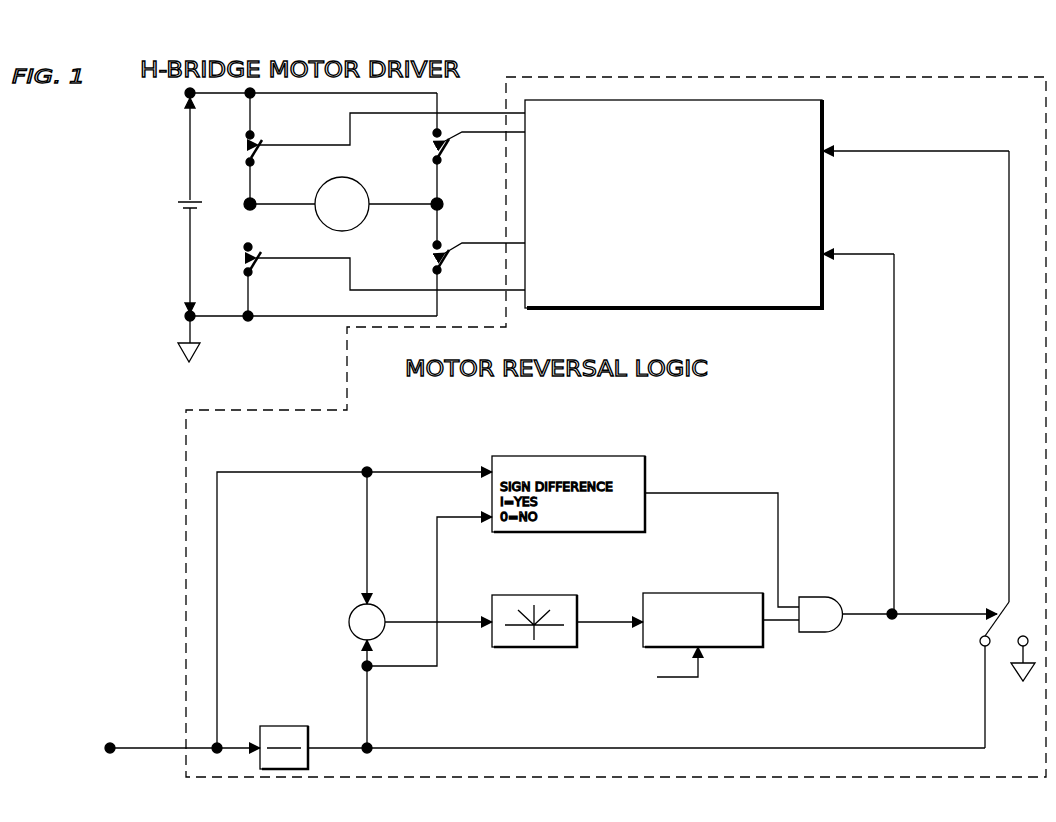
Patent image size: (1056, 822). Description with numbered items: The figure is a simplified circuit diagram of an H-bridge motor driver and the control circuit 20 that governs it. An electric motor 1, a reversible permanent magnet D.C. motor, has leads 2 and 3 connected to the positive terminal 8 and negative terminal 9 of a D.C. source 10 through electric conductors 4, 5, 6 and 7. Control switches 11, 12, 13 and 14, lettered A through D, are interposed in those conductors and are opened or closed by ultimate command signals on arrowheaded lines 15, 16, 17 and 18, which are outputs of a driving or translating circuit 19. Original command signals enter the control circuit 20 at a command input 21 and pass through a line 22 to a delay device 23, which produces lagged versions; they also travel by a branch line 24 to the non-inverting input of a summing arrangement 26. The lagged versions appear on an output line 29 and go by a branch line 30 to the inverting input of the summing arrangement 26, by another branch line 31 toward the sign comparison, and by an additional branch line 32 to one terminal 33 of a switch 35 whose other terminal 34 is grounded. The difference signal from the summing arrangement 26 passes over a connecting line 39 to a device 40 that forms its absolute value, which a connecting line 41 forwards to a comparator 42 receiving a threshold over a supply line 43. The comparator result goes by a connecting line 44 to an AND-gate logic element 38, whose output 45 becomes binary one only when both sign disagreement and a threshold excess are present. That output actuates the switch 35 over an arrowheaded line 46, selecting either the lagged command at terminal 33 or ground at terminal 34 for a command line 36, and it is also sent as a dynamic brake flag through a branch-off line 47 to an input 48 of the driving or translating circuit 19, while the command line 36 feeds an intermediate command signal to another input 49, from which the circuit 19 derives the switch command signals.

The electric motor 1 is at (343, 178).
The lead 2 is at (272, 203).
The lead 3 is at (386, 204).
The electric conductor 4 is at (252, 110).
The electric conductor 5 is at (438, 110).
The electric conductor 6 is at (250, 294).
The electric conductor 7 is at (438, 300).
The positive terminal 8 is at (186, 94).
The negative terminal 9 is at (187, 313).
The D.C. source 10 is at (176, 207).
The control switch 11 is at (245, 152).
The control switch 12 is at (432, 150).
The control switch 13 is at (242, 264).
The control switch 14 is at (432, 260).
The arrowheaded line 15 is at (290, 145).
The arrowheaded line 16 is at (483, 136).
The arrowheaded line 17 is at (292, 259).
The arrowheaded line 18 is at (477, 246).
The driving or translating circuit 19 is at (673, 204).
The control circuit 20 is at (180, 497).
The command input 21 is at (110, 753).
The line 22 is at (234, 745).
The delay device 23 is at (287, 725).
The branch line 24 is at (218, 604).
The summing arrangement 26 is at (380, 614).
The output line 29 is at (327, 745).
The branch line 30 is at (368, 715).
The branch line 31 is at (438, 590).
The branch line 32 is at (520, 746).
The terminal 33 is at (980, 645).
The terminal 34 is at (1028, 648).
The switch 35 is at (1003, 616).
The command line 36 is at (1010, 575).
The logic element 38 is at (824, 597).
The connecting line 39 is at (405, 628).
The device 40 is at (534, 650).
The connecting line 41 is at (614, 622).
The comparator 42 is at (707, 590).
The supply line 43 is at (672, 678).
The connecting line 44 is at (778, 625).
The output 45 is at (866, 613).
The arrowheaded line 46 is at (943, 606).
The branch-off line 47 is at (895, 410).
The input 48 is at (840, 256).
The input 49 is at (853, 150).